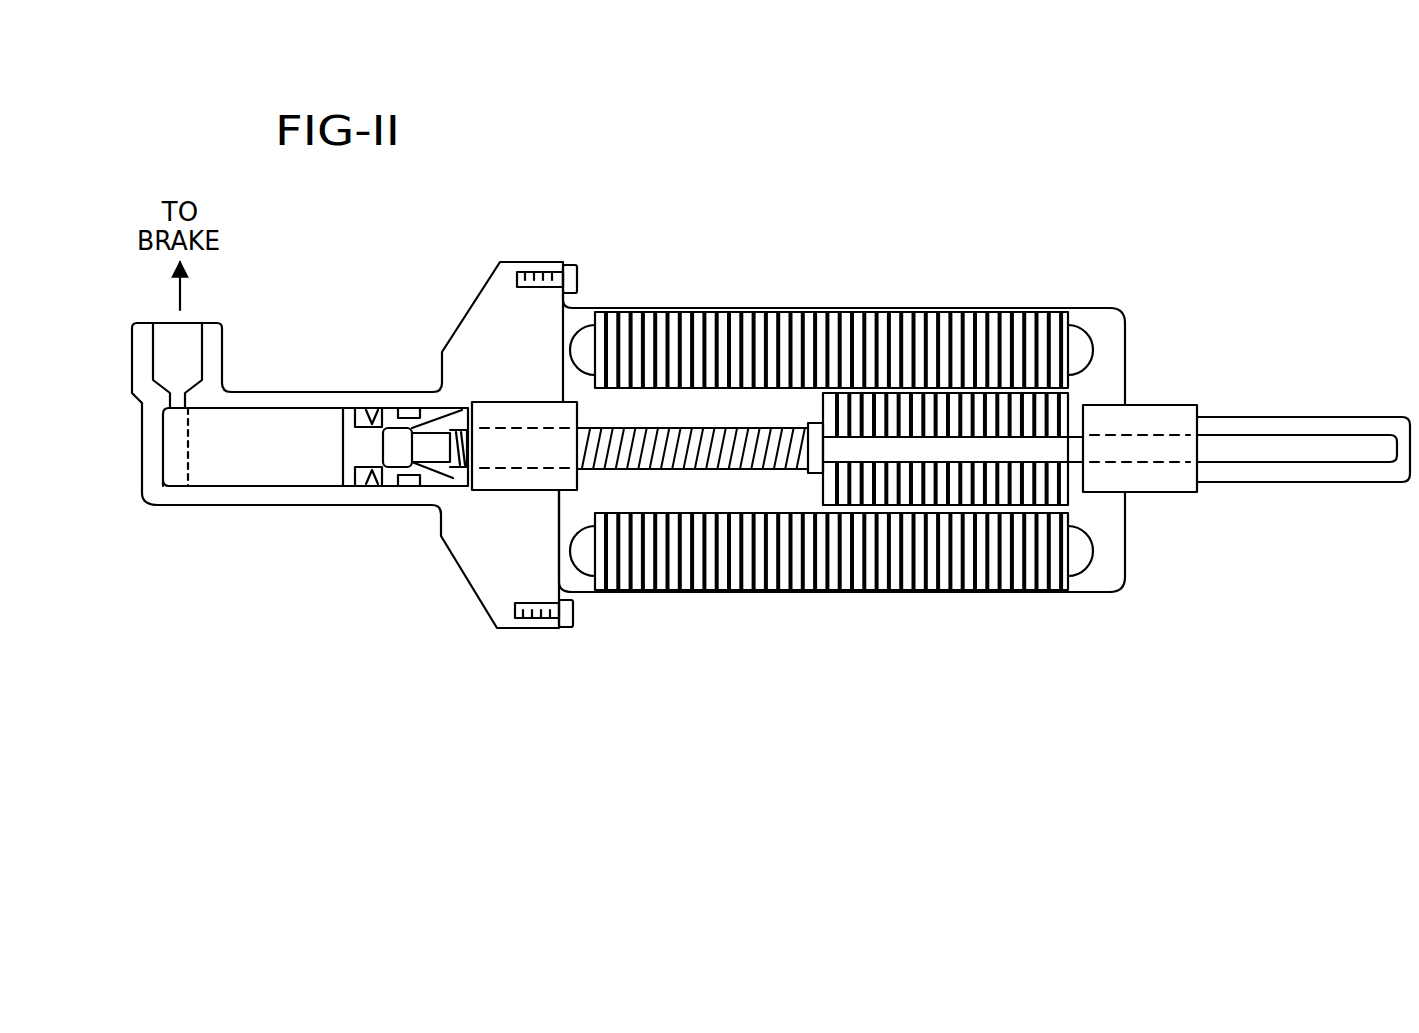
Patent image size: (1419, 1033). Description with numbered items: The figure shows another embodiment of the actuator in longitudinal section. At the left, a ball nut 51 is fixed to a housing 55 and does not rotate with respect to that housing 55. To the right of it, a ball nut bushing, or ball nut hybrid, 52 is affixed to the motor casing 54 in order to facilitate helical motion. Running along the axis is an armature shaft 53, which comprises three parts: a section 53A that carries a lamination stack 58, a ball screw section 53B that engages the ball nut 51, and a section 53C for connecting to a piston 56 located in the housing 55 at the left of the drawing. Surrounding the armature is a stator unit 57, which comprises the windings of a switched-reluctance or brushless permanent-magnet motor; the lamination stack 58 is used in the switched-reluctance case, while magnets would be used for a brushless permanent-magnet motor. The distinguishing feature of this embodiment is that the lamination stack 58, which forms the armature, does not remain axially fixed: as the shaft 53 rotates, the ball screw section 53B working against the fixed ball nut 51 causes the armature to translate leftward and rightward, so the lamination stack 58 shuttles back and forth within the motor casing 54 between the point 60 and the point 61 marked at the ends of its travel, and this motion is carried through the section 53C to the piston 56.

The ball nut 51 is at (478, 485).
The ball nut bushing 52 is at (1167, 413).
The armature shaft 53 is at (1290, 447).
The lamination stack section 53A is at (828, 657).
The ball screw section 53B is at (453, 727).
The piston connecting section 53C is at (368, 753).
The motor casing 54 is at (1120, 315).
The housing 55 is at (505, 572).
The piston 56 is at (357, 450).
The stator unit 57 is at (860, 347).
The lamination stack 58 is at (908, 492).
The point 60 is at (602, 290).
The point 61 is at (1072, 292).